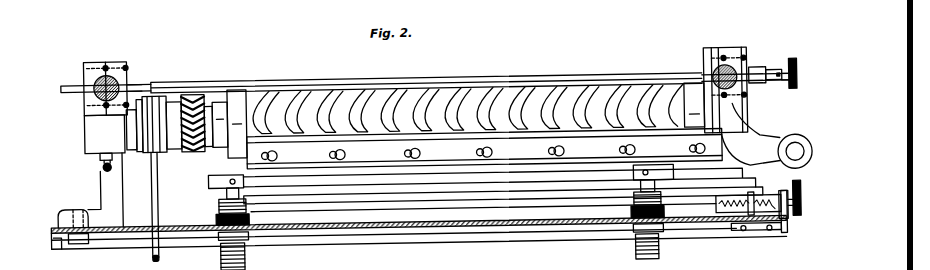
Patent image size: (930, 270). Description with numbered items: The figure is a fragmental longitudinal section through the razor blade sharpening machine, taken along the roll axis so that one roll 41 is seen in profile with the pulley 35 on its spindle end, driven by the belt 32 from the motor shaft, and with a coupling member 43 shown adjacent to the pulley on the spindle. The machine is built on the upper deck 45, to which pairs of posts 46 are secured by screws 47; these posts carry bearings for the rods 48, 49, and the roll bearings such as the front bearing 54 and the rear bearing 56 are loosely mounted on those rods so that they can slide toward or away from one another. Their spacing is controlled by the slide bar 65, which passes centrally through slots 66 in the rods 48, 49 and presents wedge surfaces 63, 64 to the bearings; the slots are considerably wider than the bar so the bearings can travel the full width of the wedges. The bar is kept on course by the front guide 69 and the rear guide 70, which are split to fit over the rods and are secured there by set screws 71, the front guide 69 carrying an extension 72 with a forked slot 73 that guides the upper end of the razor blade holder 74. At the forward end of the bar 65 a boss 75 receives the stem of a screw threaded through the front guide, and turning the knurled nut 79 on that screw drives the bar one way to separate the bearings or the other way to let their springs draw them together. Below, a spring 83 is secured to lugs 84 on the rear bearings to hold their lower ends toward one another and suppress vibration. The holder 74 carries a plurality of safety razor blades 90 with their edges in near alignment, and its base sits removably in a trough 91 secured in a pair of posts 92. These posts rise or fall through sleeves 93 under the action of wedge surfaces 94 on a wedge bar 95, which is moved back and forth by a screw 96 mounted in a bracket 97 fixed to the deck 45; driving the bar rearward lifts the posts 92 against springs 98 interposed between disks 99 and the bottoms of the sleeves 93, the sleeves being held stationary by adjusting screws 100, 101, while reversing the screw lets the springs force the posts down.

The belt 32 is at (157, 150).
The pulley 35 is at (152, 147).
The roll 41 is at (396, 90).
The herringbone gear 43 is at (195, 147).
The upper deck 45 is at (538, 226).
The post 46 is at (100, 180).
The screw 47 is at (66, 204).
The rod 48 is at (419, 253).
The rod 49 is at (86, 72).
The bearing 54 is at (705, 62).
The bearing 56 is at (85, 128).
The wedge surface 63 is at (748, 80).
The wedge surface 64 is at (137, 80).
The slide bar 65 is at (612, 78).
The slot 66 is at (143, 77).
The front guide 69 is at (735, 53).
The rear guide 70 is at (110, 56).
The set screw 71 is at (124, 59).
The extension 72 is at (740, 117).
The forked slot 73 is at (738, 122).
The razor blade holder 74 is at (762, 140).
The boss 75 is at (772, 73).
The knurled nut 79 is at (798, 68).
The spring 83 is at (103, 162).
The lug 84 is at (100, 150).
The safety razor blade 90 is at (535, 130).
The trough 91 is at (410, 176).
The post 92 is at (224, 194).
The sleeve 93 is at (246, 203).
The wedge surface 94 is at (208, 178).
The wedge bar 95 is at (470, 201).
The screw 96 is at (762, 198).
The bracket 97 is at (782, 240).
The spring 98 is at (244, 252).
The disk 99 is at (658, 262).
The adjusting screw 100 is at (249, 216).
The adjusting screw 101 is at (220, 232).